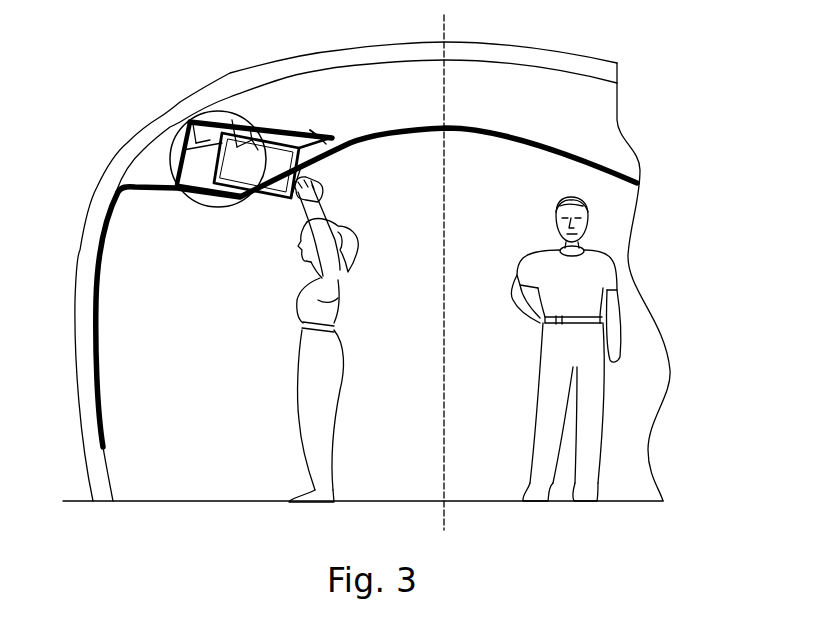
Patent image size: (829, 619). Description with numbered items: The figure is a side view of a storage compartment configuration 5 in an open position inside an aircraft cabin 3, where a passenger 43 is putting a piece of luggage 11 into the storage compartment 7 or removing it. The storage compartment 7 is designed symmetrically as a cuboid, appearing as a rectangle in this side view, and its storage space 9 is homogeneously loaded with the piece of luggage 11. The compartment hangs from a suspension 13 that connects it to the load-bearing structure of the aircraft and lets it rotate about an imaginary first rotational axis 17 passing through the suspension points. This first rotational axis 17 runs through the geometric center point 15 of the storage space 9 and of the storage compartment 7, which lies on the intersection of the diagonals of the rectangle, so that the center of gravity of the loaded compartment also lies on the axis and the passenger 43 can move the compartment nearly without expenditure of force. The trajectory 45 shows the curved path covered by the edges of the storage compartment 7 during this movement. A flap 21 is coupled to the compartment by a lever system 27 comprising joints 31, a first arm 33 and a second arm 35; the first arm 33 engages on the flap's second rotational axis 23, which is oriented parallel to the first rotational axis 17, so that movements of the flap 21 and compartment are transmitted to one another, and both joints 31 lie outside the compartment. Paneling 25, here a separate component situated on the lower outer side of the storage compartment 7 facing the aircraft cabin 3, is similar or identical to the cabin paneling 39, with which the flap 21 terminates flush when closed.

The aircraft cabin 3 is at (618, 220).
The storage compartment configuration 5 is at (336, 182).
The storage compartment 7 is at (197, 167).
The storage space 9 is at (193, 127).
The piece of luggage 11 is at (278, 190).
The suspension 13 is at (290, 82).
The geometric center point 15 is at (290, 82).
The first rotational axis 17 is at (250, 130).
The flap 21 is at (323, 136).
The second rotational axis 23 is at (340, 157).
The paneling 25 is at (222, 200).
The lever system 27 is at (336, 140).
The joints 31 is at (200, 121).
The first arm 33 is at (378, 96).
The second arm 35 is at (313, 131).
The cabin paneling 39 is at (157, 197).
The passenger 43 is at (320, 297).
The trajectory 45 is at (243, 133).